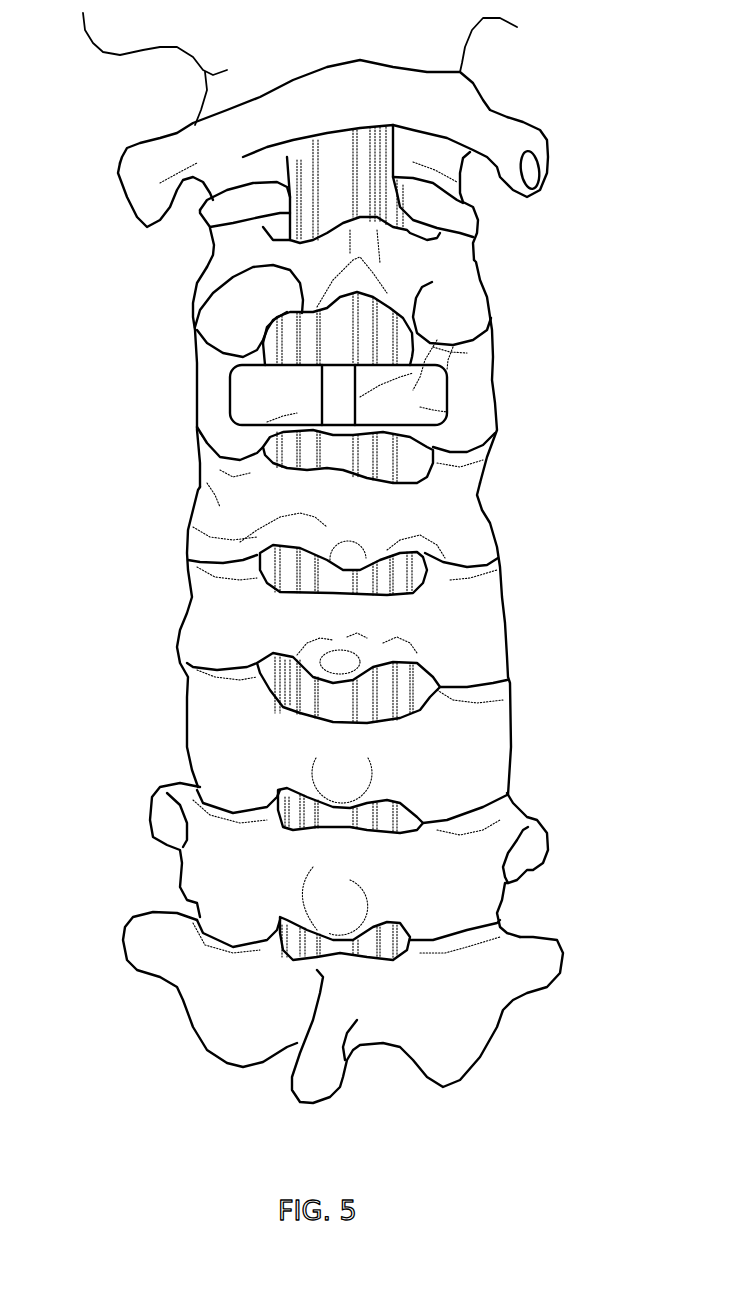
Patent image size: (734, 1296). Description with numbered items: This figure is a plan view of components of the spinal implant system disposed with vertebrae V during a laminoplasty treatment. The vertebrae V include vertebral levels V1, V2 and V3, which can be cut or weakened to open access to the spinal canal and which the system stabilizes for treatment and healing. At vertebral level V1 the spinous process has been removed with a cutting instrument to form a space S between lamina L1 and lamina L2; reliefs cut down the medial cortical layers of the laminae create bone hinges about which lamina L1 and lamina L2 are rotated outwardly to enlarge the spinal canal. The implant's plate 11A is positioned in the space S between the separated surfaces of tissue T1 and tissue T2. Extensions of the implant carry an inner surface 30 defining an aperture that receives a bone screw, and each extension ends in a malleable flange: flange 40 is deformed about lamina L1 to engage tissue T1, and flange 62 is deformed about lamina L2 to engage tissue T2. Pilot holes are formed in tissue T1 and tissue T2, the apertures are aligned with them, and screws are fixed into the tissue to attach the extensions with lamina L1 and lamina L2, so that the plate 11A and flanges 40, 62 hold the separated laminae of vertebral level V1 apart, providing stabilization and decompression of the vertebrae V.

The space S is at (328, 354).
The inner surface 30 is at (435, 333).
The lamina L1 is at (230, 382).
The lamina L2 is at (478, 330).
The vertebral level V1 is at (217, 397).
The flange 62 is at (450, 405).
The tissue T1 is at (203, 403).
The vertebrae V is at (557, 414).
The plate 11A is at (215, 417).
The tissue T2 is at (483, 430).
The flange 40 is at (297, 413).
The vertebral level V2 is at (188, 513).
The vertebral level V3 is at (182, 638).